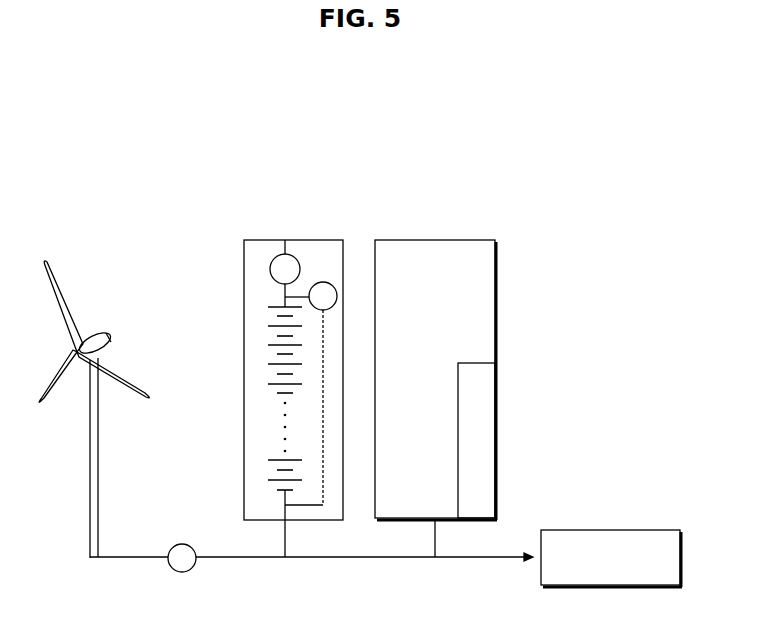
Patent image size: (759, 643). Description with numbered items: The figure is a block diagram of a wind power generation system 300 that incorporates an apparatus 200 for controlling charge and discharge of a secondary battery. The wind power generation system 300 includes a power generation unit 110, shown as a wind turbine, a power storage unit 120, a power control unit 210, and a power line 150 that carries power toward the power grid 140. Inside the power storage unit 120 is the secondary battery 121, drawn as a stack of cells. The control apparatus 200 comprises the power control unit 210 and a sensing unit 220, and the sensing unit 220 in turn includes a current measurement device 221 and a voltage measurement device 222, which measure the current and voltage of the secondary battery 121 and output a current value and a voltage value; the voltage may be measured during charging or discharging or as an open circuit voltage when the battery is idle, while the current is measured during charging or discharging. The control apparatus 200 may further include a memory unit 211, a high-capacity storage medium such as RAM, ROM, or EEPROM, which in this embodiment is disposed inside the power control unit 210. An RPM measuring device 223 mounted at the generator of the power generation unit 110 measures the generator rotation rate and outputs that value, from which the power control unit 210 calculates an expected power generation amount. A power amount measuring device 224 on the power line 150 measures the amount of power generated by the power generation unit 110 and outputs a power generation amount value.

The wind power generation system 300 is at (137, 110).
The power generation unit 110 is at (92, 337).
The RPM measuring device 223 is at (118, 332).
The power line 150 is at (131, 557).
The power amount measuring device 224 is at (181, 544).
The power storage unit 120 is at (258, 240).
The secondary battery 121 is at (258, 347).
The current measurement device 221 is at (291, 256).
The voltage measurement device 222 is at (330, 285).
The sensing unit 220 is at (298, 192).
The control apparatus 200 is at (442, 148).
The power control unit 210 is at (422, 240).
The memory unit 211 is at (497, 432).
The power grid 140 is at (661, 530).